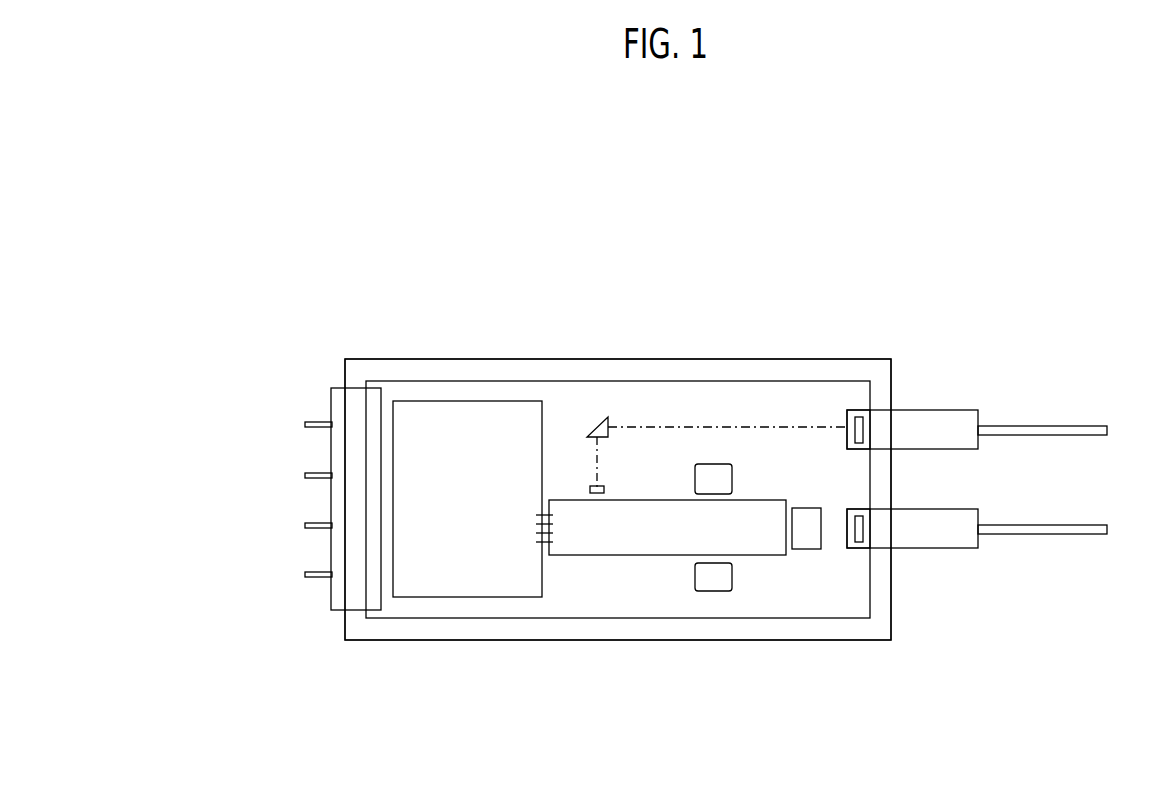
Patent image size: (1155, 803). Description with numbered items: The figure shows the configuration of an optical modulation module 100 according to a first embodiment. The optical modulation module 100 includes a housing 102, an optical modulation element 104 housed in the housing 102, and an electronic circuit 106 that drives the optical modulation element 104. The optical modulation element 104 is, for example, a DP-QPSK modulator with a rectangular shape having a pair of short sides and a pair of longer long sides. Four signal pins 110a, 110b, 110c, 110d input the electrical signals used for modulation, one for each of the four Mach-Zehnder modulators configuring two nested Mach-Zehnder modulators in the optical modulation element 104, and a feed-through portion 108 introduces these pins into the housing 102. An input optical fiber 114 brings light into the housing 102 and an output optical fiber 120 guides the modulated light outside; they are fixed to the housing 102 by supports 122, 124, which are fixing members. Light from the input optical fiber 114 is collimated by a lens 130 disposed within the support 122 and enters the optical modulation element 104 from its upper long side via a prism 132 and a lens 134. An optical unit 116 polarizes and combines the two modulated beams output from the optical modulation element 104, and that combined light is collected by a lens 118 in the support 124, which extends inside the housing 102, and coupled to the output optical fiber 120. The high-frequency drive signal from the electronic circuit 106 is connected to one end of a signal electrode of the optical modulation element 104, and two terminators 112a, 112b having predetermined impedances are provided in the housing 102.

The optical modulation module 100 is at (322, 229).
The housing 102 is at (442, 359).
The optical modulation element 104 is at (612, 547).
The electronic circuit 106 is at (490, 413).
The feed-through portion 108 is at (335, 400).
The signal pin 110a is at (305, 424).
The signal pin 110b is at (305, 475).
The signal pin 110c is at (305, 525).
The signal pin 110d is at (305, 574).
The terminator 112a is at (712, 478).
The terminator 112b is at (710, 582).
The input optical fiber 114 is at (1048, 432).
The optical unit 116 is at (805, 538).
The lens 118 is at (857, 545).
The output optical fiber 120 is at (1048, 532).
The support 122 is at (943, 422).
The support 124 is at (938, 527).
The lens 130 is at (858, 413).
The prism 132 is at (607, 418).
The lens 134 is at (605, 493).